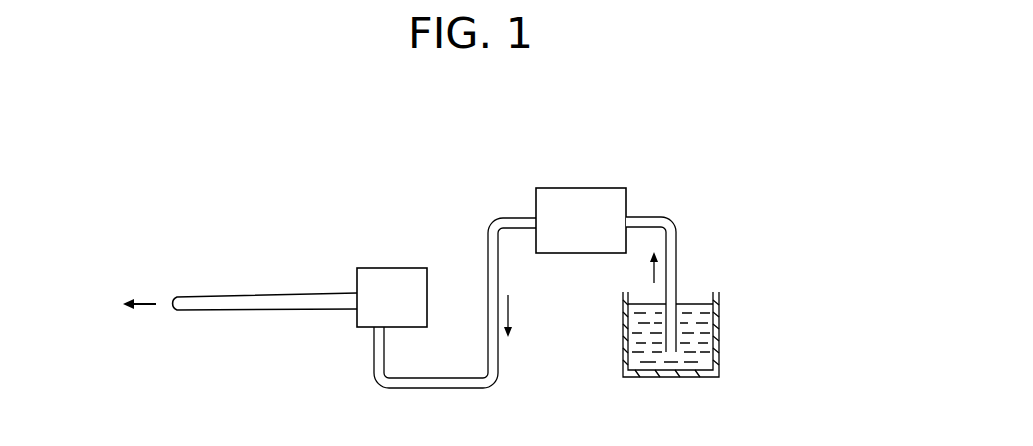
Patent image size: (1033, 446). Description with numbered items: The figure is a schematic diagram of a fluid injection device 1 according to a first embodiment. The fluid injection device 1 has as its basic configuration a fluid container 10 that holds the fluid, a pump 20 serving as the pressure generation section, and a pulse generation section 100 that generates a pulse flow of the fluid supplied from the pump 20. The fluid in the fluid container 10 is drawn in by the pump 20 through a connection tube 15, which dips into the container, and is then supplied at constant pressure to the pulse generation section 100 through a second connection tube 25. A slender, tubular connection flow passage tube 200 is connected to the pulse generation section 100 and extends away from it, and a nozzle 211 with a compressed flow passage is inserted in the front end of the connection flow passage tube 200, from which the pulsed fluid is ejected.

The fluid injection device 1 is at (687, 131).
The fluid container 10 is at (736, 269).
The connection tube 15 is at (680, 270).
The pump 20 is at (590, 188).
The connection tube 25 is at (463, 377).
The pulse generation section 100 is at (402, 268).
The connection flow passage tube 200 is at (272, 292).
The nozzle 211 is at (172, 295).